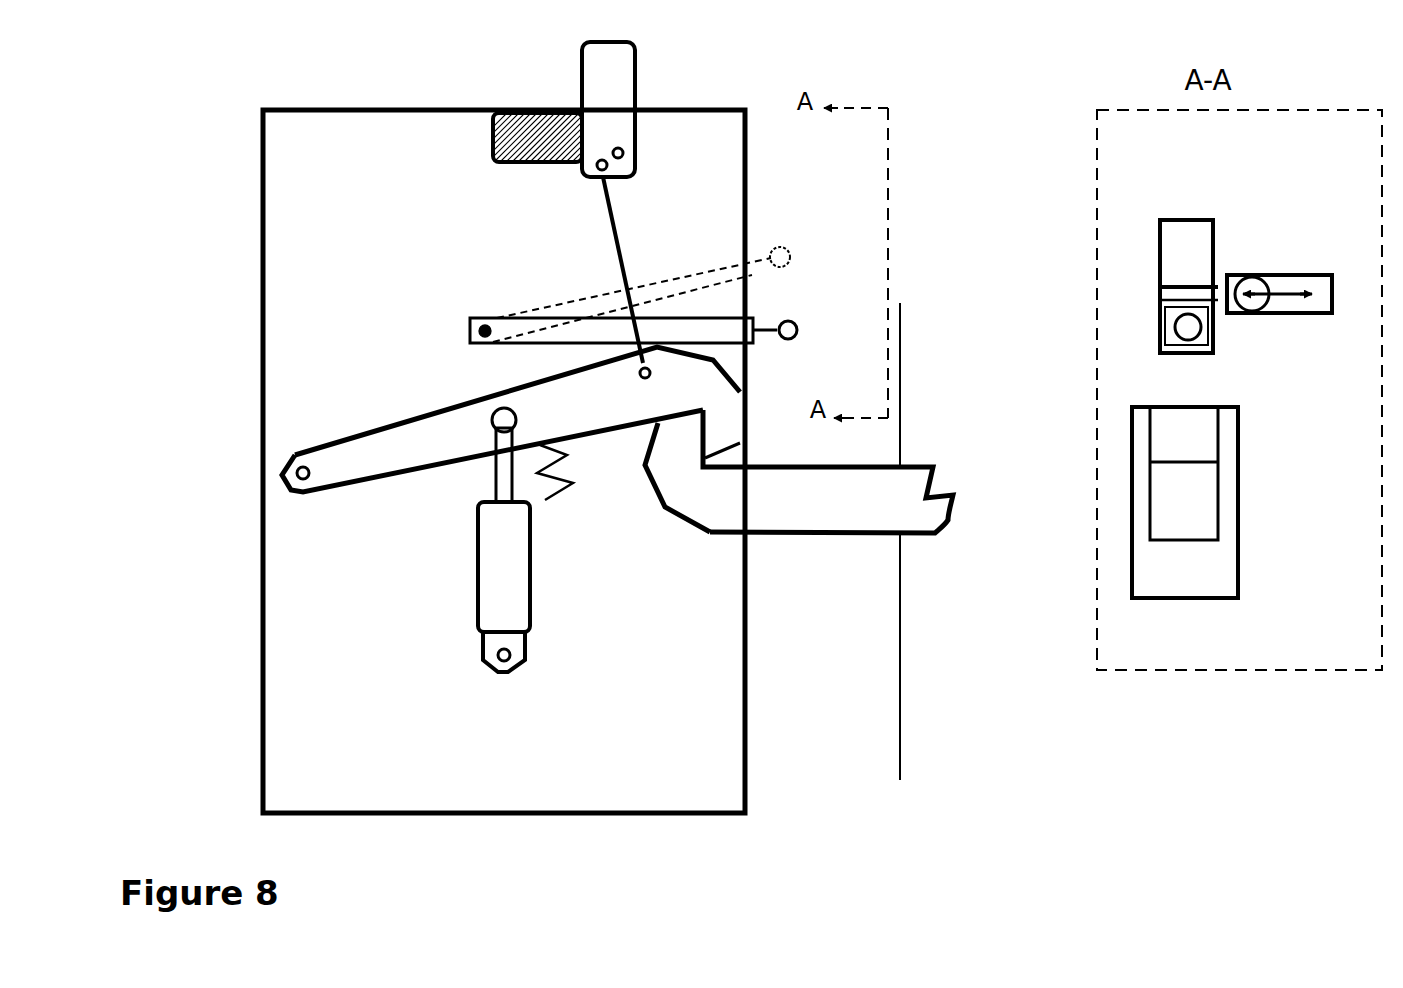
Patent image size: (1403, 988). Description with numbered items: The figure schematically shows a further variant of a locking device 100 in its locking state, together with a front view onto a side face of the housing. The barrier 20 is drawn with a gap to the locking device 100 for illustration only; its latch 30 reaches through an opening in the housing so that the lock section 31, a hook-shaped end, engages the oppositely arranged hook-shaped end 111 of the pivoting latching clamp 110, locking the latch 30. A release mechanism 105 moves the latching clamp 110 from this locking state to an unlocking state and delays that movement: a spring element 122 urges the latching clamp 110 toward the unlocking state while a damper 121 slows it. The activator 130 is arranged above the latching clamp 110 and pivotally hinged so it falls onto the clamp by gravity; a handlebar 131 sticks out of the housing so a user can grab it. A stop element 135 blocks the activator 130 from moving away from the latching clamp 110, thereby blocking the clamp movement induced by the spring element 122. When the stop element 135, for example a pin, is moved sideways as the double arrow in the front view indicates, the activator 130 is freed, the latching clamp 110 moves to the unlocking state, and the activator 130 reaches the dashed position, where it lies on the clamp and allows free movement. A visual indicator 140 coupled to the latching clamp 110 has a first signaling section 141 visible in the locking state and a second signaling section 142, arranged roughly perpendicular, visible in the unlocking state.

The locking device 100 is at (258, 247).
The release mechanism 105 is at (505, 719).
The latching clamp 110 is at (397, 437).
The hook-shaped end 111 is at (730, 427).
The damper 121 is at (490, 547).
The spring element 122 is at (557, 487).
The activator 130 is at (677, 330).
The handlebar 131 is at (1178, 327).
The stop element 135 is at (1190, 293).
The visual indicator 140 is at (530, 87).
The first signaling section 141 is at (618, 63).
The second signaling section 142 is at (490, 120).
The barrier 20 is at (900, 408).
The latch 30 is at (1167, 518).
The lock section 31 is at (680, 480).